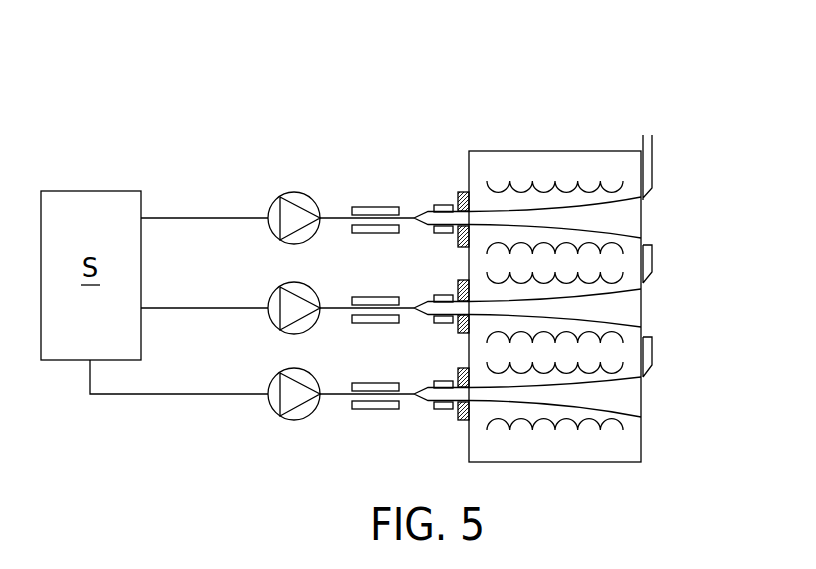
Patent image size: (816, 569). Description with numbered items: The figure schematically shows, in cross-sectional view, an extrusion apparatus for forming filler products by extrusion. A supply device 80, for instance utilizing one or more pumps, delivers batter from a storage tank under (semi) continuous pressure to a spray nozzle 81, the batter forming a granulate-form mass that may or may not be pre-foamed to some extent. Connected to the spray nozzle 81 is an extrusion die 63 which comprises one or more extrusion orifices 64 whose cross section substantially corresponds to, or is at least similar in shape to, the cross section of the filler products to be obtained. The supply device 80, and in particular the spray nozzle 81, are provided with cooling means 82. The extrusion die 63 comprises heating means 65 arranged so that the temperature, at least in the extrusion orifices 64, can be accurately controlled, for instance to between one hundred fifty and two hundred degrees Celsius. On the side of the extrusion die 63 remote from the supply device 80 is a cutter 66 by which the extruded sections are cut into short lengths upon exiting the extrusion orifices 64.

The extrusion die 63 is at (541, 116).
The extrusion orifices 64 is at (623, 218).
The heating means 65 is at (623, 423).
The cutter 66 is at (648, 162).
The supply device 80 is at (269, 161).
The spray nozzle 81 is at (426, 209).
The cooling means 82 is at (363, 206).